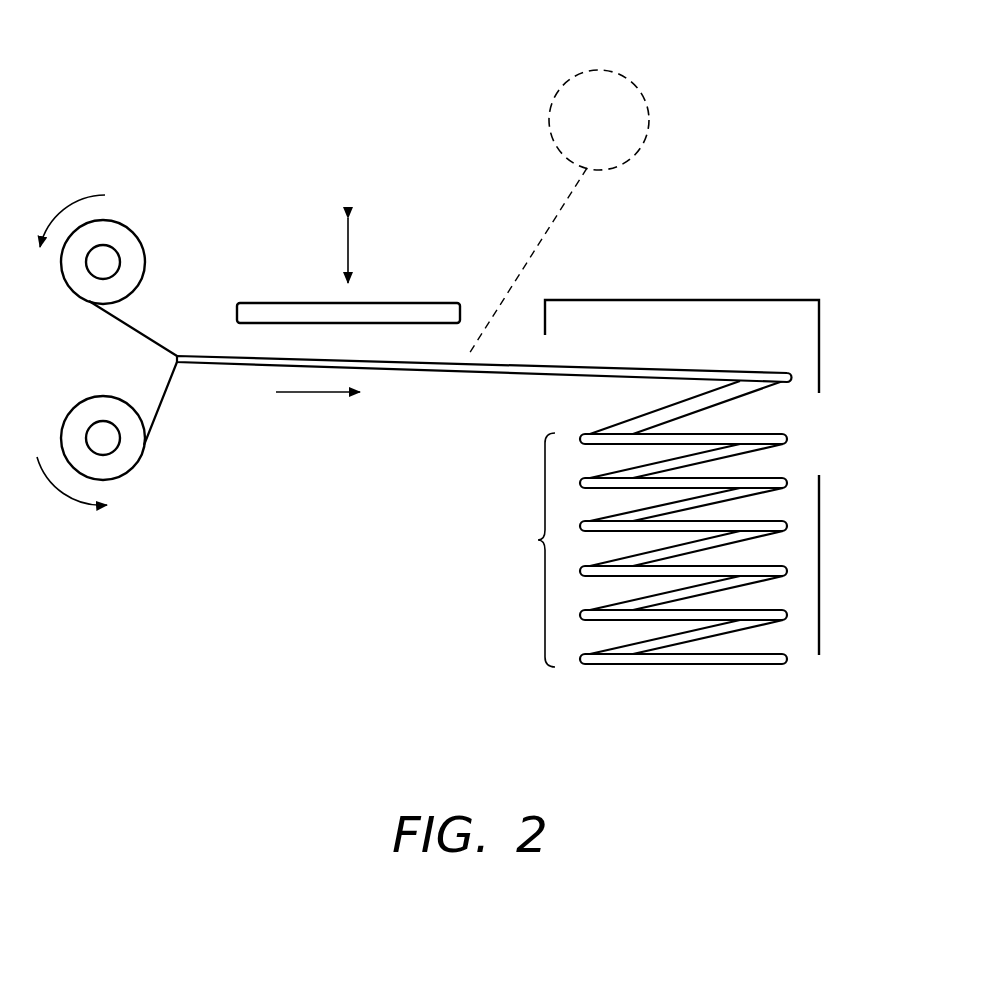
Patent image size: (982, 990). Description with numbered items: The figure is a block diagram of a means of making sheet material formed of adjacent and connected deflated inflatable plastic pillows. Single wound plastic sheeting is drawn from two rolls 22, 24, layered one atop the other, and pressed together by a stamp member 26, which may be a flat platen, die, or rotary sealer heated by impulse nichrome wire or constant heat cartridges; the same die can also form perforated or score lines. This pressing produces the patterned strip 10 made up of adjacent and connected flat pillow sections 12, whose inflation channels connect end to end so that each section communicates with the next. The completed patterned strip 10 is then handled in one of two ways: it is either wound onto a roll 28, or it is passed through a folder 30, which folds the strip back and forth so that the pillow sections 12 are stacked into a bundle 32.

The patterned strip 10 is at (445, 368).
The flat pillow sections 12 is at (743, 392).
The roll 22 is at (125, 223).
The roll 24 is at (70, 413).
The stamp member 26 is at (280, 303).
The roll 28 is at (550, 115).
The folder 30 is at (732, 300).
The bundle 32 is at (526, 550).